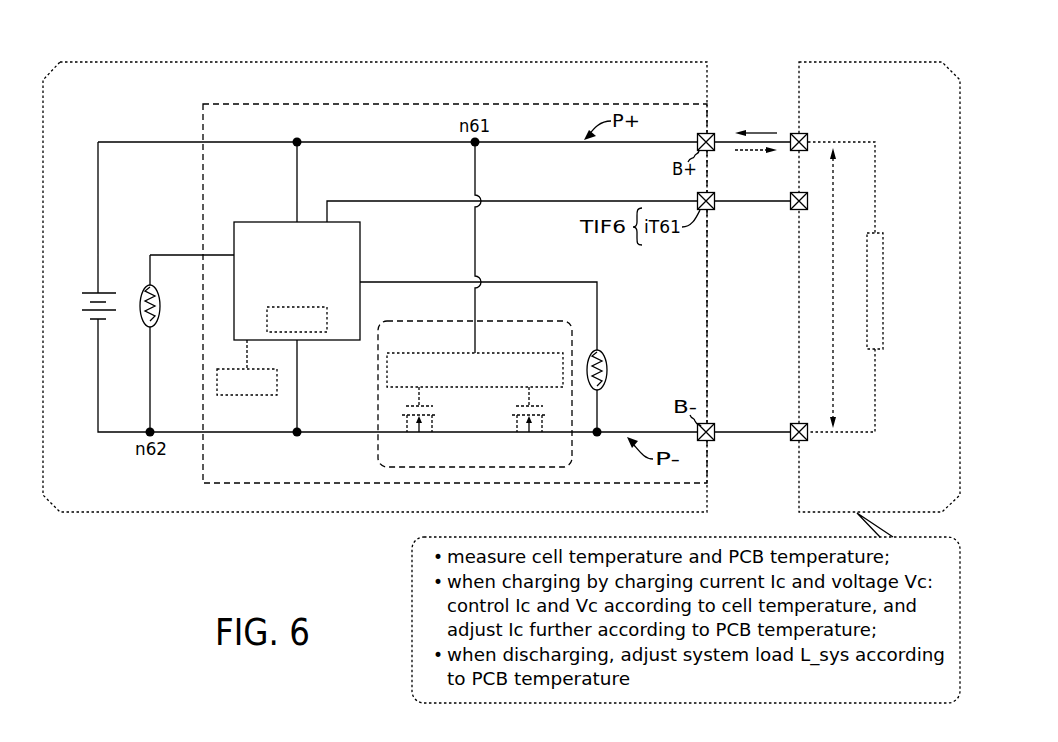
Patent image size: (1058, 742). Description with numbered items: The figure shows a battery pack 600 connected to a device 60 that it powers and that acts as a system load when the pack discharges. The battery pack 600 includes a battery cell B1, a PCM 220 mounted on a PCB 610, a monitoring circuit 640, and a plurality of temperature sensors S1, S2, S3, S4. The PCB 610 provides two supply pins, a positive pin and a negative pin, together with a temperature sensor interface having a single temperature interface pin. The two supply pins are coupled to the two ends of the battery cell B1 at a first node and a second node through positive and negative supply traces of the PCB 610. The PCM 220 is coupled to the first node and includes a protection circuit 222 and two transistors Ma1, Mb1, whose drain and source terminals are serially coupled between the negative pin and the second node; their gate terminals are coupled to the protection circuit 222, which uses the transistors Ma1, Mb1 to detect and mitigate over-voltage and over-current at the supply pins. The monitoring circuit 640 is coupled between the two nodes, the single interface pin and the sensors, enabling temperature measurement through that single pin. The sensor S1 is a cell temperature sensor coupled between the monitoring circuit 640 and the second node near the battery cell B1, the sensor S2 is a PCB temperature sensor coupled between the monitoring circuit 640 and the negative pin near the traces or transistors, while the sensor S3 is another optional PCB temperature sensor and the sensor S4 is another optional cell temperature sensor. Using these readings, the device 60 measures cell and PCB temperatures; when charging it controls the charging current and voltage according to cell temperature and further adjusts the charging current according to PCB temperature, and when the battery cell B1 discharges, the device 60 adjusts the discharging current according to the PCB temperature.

The battery pack 600 is at (418, 62).
The device 60 is at (858, 62).
The PCB 610 is at (203, 122).
The monitoring circuit 640 is at (324, 281).
The PCM 220 is at (475, 382).
The protection circuit 222 is at (447, 353).
The battery cell B1 is at (86, 306).
The temperature sensor S1 is at (162, 306).
The temperature sensor S2 is at (609, 370).
The temperature sensor S3 is at (297, 319).
The temperature sensor S4 is at (247, 367).
The transistor Ma1 is at (420, 420).
The transistor Mb1 is at (530, 420).